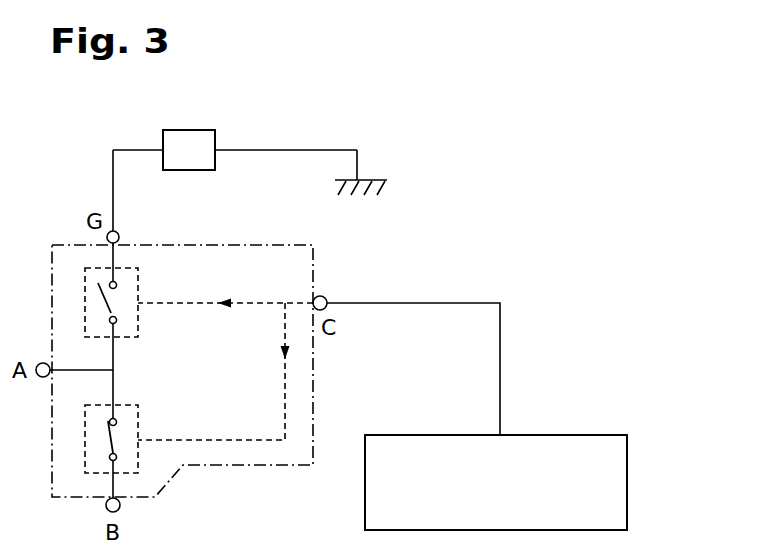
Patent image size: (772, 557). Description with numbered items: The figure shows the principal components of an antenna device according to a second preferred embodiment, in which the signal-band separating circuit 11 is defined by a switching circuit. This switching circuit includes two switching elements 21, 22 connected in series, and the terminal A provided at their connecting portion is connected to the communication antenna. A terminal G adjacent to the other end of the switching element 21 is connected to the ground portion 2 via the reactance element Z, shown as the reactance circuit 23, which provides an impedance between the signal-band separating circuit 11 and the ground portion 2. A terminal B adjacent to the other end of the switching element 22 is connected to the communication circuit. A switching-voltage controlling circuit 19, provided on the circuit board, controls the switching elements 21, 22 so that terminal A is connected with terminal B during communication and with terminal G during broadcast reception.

The ground portion 2 is at (366, 190).
The signal-band separating circuit 11 is at (275, 245).
The switching-voltage controlling circuit 19 is at (553, 433).
The switching element 21 is at (142, 283).
The switching element 22 is at (142, 420).
The reactance circuit 23 is at (186, 172).